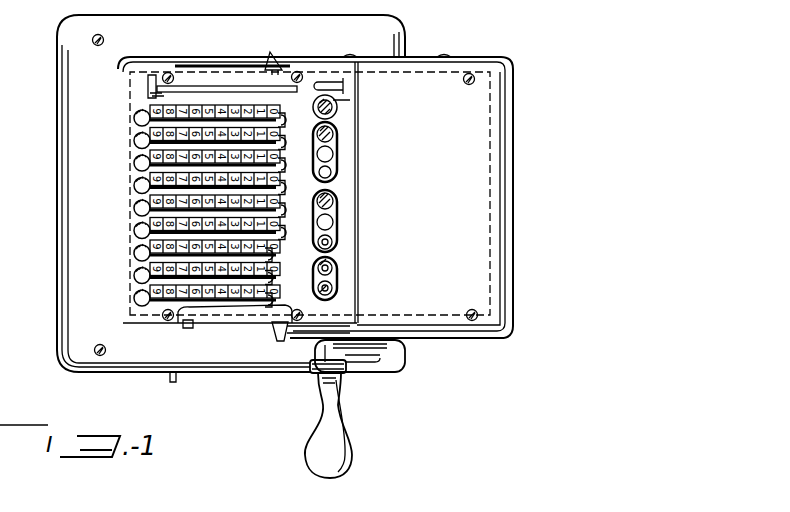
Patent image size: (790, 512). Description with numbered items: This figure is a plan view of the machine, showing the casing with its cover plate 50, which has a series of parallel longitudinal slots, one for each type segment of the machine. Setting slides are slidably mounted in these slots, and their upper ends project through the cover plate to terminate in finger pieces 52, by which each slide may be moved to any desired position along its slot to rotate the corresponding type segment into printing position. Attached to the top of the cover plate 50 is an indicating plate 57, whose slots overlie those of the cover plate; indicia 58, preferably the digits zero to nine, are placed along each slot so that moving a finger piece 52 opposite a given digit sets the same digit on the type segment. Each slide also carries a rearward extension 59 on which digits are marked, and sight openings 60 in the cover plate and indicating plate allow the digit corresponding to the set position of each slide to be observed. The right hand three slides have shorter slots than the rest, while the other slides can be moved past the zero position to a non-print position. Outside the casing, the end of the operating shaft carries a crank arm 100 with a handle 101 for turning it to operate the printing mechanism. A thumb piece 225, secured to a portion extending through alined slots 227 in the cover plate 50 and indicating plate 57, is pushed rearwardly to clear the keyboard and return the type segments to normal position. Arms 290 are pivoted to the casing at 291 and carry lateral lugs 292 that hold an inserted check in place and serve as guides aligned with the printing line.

The cover plate 50 is at (315, 197).
The finger pieces 52 is at (273, 258).
The indicating plate 57 is at (359, 183).
The indicia 58 is at (227, 103).
The rearward extension 59 is at (342, 284).
The sight openings 60 is at (336, 207).
The crank arm 100 is at (400, 366).
The handle 101 is at (318, 449).
The thumb piece 225 is at (150, 88).
The alined slots 227 is at (207, 88).
The arms 290 is at (233, 320).
The pivot 291 is at (193, 324).
The lateral lug 292 is at (272, 53).